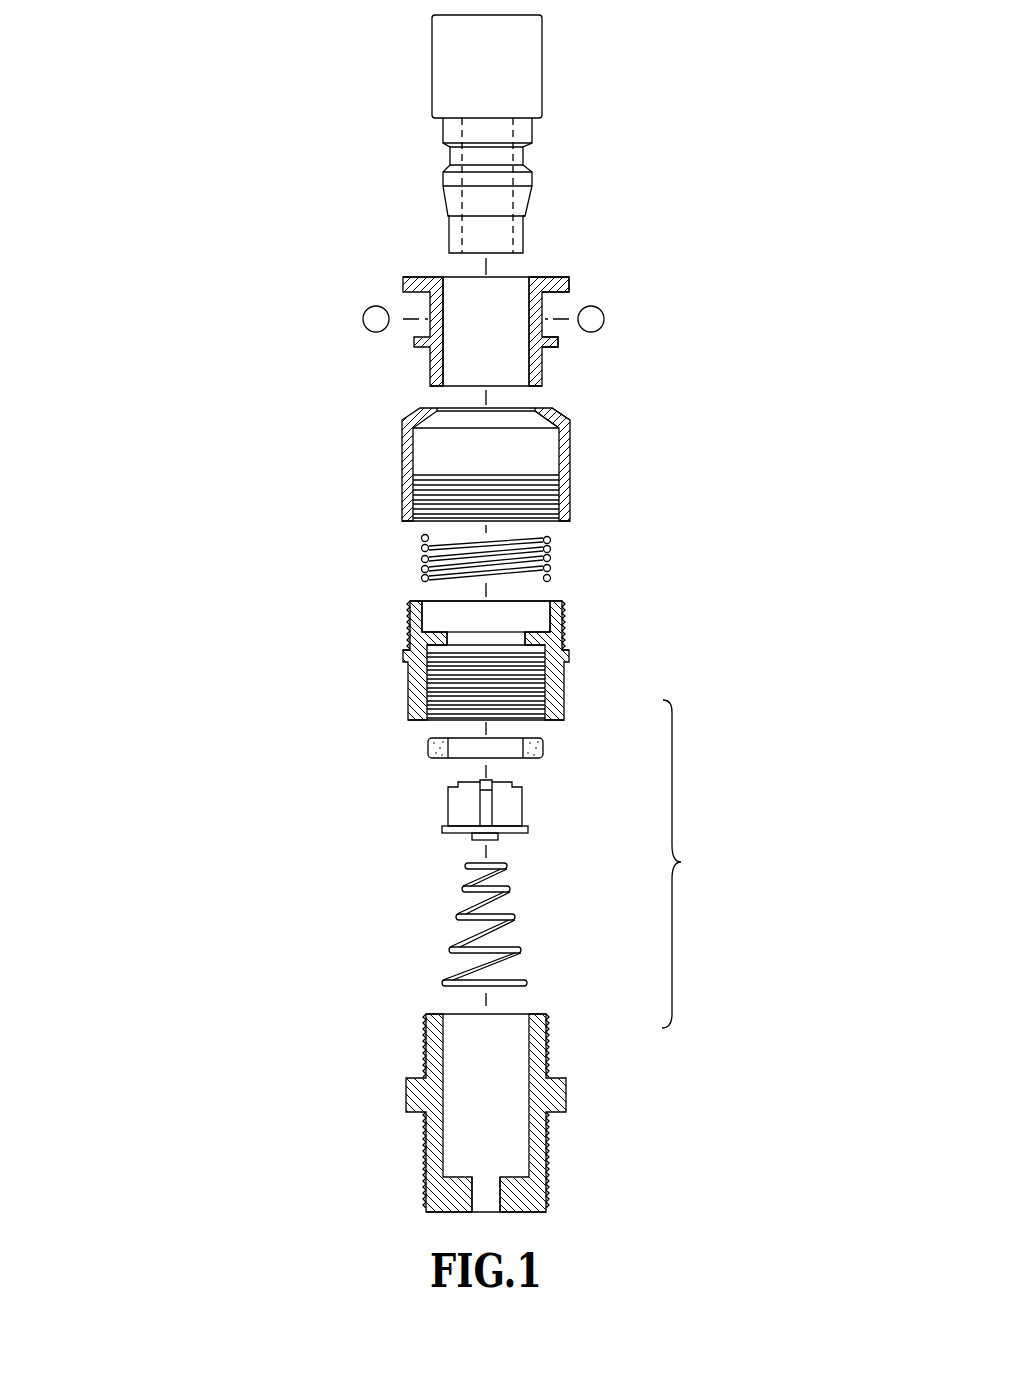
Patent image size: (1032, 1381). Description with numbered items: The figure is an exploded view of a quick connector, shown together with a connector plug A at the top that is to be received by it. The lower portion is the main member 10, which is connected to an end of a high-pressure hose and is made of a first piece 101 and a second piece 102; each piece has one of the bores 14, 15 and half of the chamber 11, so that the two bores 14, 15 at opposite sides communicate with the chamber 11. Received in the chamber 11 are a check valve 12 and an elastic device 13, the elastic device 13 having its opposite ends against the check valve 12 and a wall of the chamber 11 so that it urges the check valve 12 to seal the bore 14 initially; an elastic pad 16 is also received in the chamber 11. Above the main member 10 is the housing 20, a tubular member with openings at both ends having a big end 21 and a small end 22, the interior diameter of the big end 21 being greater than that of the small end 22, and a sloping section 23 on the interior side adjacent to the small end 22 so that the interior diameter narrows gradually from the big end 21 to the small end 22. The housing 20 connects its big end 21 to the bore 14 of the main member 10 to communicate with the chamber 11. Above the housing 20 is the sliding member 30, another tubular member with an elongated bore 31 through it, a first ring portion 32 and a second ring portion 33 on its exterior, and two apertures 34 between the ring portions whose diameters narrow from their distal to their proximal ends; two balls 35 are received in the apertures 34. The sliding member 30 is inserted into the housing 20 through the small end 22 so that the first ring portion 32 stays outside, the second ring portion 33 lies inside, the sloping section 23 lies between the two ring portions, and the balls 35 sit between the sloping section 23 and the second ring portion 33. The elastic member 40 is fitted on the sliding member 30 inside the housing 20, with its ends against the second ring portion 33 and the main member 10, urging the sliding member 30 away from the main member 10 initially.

The connector plug A is at (523, 200).
The main member 10 is at (505, 906).
The chamber 11 is at (534, 1106).
The check valve 12 is at (448, 813).
The elastic device 13 is at (463, 932).
The bore 14 is at (460, 635).
The bore 15 is at (487, 1190).
The elastic pad 16 is at (425, 750).
The first piece 101 is at (558, 690).
The second piece 102 is at (532, 1040).
The housing 20 is at (466, 479).
The big end 21 is at (433, 521).
The small end 22 is at (440, 407).
The sloping section 23 is at (562, 415).
The sliding member 30 is at (473, 314).
The elongated bore 31 is at (460, 357).
The first ring portion 32 is at (570, 285).
The second ring portion 33 is at (558, 342).
The apertures 34 is at (545, 327).
The balls 35 is at (364, 317).
The elastic member 40 is at (549, 561).